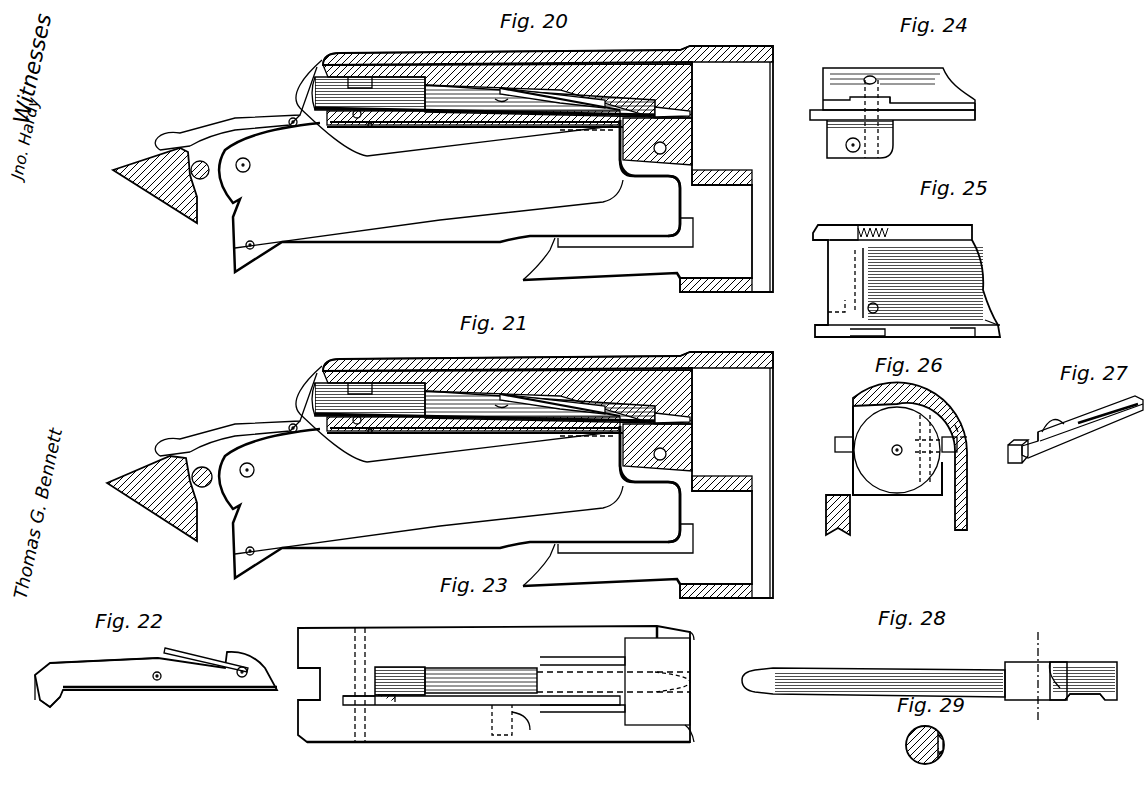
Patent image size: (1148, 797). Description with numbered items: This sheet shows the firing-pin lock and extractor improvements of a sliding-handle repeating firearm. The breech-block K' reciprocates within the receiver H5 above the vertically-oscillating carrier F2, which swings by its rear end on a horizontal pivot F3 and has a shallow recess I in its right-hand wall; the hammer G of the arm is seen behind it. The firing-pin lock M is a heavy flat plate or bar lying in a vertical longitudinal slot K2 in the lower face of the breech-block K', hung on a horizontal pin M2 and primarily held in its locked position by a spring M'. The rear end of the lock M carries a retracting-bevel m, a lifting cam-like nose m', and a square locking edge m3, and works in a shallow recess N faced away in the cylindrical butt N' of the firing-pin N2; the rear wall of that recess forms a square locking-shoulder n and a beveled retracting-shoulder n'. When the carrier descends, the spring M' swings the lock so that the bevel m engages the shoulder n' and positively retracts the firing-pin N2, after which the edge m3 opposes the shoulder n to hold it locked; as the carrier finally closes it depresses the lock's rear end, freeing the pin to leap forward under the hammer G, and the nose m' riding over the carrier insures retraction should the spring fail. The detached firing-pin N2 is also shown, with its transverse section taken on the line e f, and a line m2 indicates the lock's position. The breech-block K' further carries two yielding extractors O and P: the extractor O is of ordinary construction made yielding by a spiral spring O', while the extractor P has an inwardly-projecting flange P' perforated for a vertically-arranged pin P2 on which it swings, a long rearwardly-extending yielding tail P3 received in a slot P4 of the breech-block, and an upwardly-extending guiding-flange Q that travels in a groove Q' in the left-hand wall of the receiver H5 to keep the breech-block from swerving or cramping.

In FIG. 20, the vertically-oscillating carrier F2 is at (650, 178).
In FIG. 21, the vertically-oscillating carrier F2 is at (650, 484).
In FIG. 20, the horizontal pivot F3 is at (160, 185).
In FIG. 21, the horizontal pivot F3 is at (159, 498).
In FIG. 20, the hammer G is at (205, 132).
In FIG. 21, the hammer G is at (236, 414).
In FIG. 20, the receiver H5 is at (379, 63).
In FIG. 21, the receiver H5 is at (548, 465).
In FIG. 26, the receiver H5 is at (973, 502).
In FIG. 20, the shallow recess I is at (456, 200).
In FIG. 21, the shallow recess I is at (456, 506).
In FIG. 20, the breech-block K' is at (507, 94).
In FIG. 21, the breech-block K' is at (507, 405).
In FIG. 23, the breech-block K' is at (494, 674).
In FIG. 24, the breech-block K' is at (899, 99).
In FIG. 25, the breech-block K' is at (906, 281).
In FIG. 26, the breech-block K' is at (897, 450).
In FIG. 20, the vertical longitudinal slot K2 is at (570, 90).
In FIG. 21, the vertical longitudinal slot K2 is at (552, 376).
In FIG. 23, the vertical longitudinal slot K2 is at (485, 706).
In FIG. 20, the firing-pin lock M is at (475, 142).
In FIG. 21, the firing-pin lock M is at (475, 383).
In FIG. 22, the firing-pin lock M is at (156, 681).
In FIG. 23, the firing-pin lock M is at (481, 727).
In FIG. 20, the spring M' is at (560, 69).
In FIG. 21, the spring M' is at (560, 371).
In FIG. 22, the spring M' is at (206, 650).
In FIG. 20, the horizontal pin M2 is at (505, 125).
In FIG. 21, the horizontal pin M2 is at (495, 438).
In FIG. 23, the horizontal pin M2 is at (530, 735).
In FIG. 20, the retracting-bevel m is at (475, 80).
In FIG. 21, the retracting-bevel m is at (475, 435).
In FIG. 22, the retracting-bevel m is at (92, 655).
In FIG. 20, the lifting cam-like nose m' is at (371, 132).
In FIG. 21, the lifting cam-like nose m' is at (374, 445).
In FIG. 22, the lifting cam-like nose m' is at (50, 711).
In FIG. 23, the lifting cam-like nose m' is at (380, 725).
In FIG. 20, the lever rear spring m2 is at (575, 132).
In FIG. 21, the lever rear spring m2 is at (491, 449).
In FIG. 22, the lever rear spring m2 is at (246, 692).
In FIG. 20, the square locking edge m3 is at (362, 122).
In FIG. 21, the square locking edge m3 is at (361, 459).
In FIG. 22, the square locking edge m3 is at (34, 686).
In FIG. 28, the shallow recess N is at (1033, 668).
In FIG. 29, the shallow recess N is at (958, 742).
In FIG. 20, the cylindrical butt N' is at (360, 111).
In FIG. 21, the cylindrical butt N' is at (359, 417).
In FIG. 23, the cylindrical butt N' is at (400, 665).
In FIG. 28, the cylindrical butt N' is at (1083, 669).
In FIG. 29, the cylindrical butt N' is at (910, 745).
In FIG. 20, the firing-pin N2 is at (452, 96).
In FIG. 21, the firing-pin N2 is at (502, 436).
In FIG. 23, the firing-pin N2 is at (465, 680).
In FIG. 28, the firing-pin N2 is at (838, 676).
In FIG. 20, the square locking-shoulder n is at (360, 82).
In FIG. 21, the square locking-shoulder n is at (360, 388).
In FIG. 28, the square locking-shoulder n is at (1058, 663).
In FIG. 29, the square locking-shoulder n is at (948, 729).
In FIG. 28, the beveled retracting-shoulder n' is at (1076, 708).
In FIG. 29, the beveled retracting-shoulder n' is at (951, 756).
In FIG. 23, the extractor O is at (688, 620).
In FIG. 25, the extractor O is at (843, 219).
In FIG. 26, the extractor O is at (832, 446).
In FIG. 23, the spiral spring O' is at (659, 618).
In FIG. 25, the spiral spring O' is at (873, 217).
In FIG. 23, the extractor P is at (687, 745).
In FIG. 24, the extractor P is at (881, 132).
In FIG. 25, the extractor P is at (896, 333).
In FIG. 26, the extractor P is at (963, 445).
In FIG. 27, the extractor P is at (1018, 462).
In FIG. 25, the inwardly-projecting flange P' is at (822, 307).
In FIG. 27, the inwardly-projecting flange P' is at (1048, 410).
In FIG. 24, the vertically-arranged pin P2 is at (830, 88).
In FIG. 25, the vertically-arranged pin P2 is at (876, 305).
In FIG. 24, the rearwardly-extending yielding tail P3 is at (975, 112).
In FIG. 25, the rearwardly-extending yielding tail P3 is at (958, 338).
In FIG. 27, the rearwardly-extending yielding tail P3 is at (1120, 420).
In FIG. 25, the slot P4 is at (1000, 327).
In FIG. 24, the guiding-flange Q is at (931, 87).
In FIG. 25, the guiding-flange Q is at (866, 346).
In FIG. 26, the guiding-flange Q is at (964, 409).
In FIG. 27, the guiding-flange Q is at (1050, 451).
In FIG. 26, the groove Q' is at (979, 426).
In FIG. 28, the section line e is at (1042, 670).
In FIG. 28, the section line f is at (1035, 736).